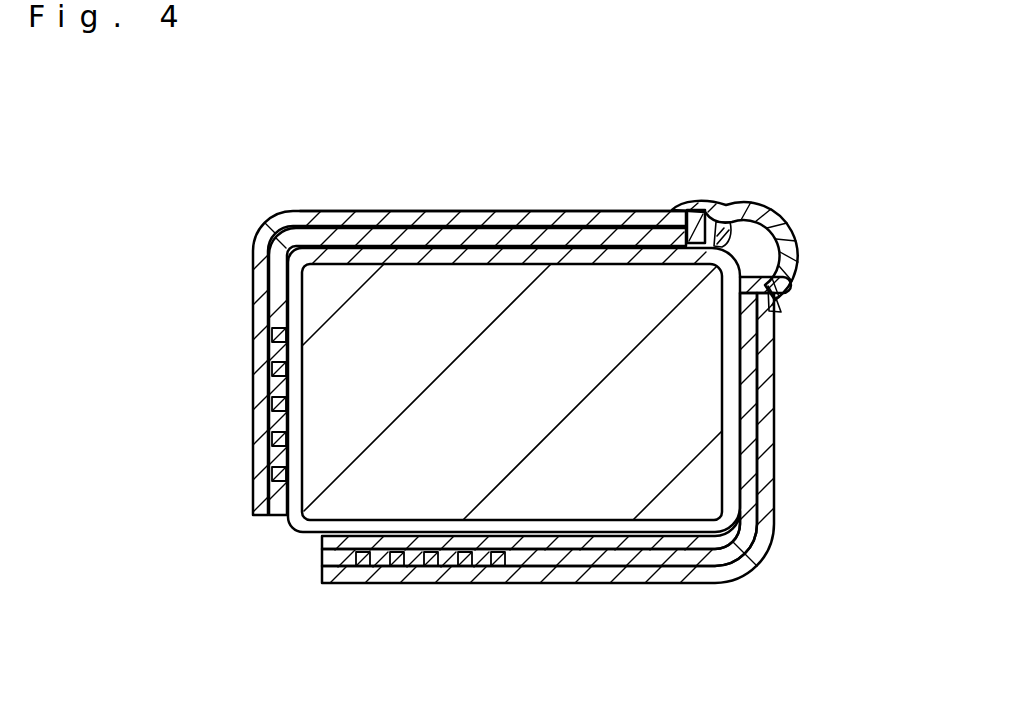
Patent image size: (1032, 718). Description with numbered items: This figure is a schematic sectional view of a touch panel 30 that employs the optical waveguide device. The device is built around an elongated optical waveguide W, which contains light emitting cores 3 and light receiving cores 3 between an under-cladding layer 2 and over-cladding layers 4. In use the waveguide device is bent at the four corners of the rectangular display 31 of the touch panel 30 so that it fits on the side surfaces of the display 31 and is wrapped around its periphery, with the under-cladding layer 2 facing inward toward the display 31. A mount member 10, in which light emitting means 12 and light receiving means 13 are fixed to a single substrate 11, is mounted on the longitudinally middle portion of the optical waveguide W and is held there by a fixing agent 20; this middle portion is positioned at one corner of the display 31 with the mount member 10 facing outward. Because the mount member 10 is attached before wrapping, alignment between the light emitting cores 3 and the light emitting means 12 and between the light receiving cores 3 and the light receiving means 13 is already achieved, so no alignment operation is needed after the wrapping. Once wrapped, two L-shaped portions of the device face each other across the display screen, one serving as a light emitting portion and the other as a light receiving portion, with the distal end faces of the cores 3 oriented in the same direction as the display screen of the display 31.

The under-cladding layer 2 is at (345, 577).
The cores 3 is at (280, 376).
The over-cladding layers 4 is at (262, 446).
The mount member 10 is at (606, 331).
The substrate 11 is at (787, 237).
The light emitting means 12 is at (694, 222).
The light receiving means 13 is at (785, 286).
The fixing agent 20 is at (685, 200).
The touch panel 30 is at (476, 382).
The display 31 is at (417, 283).
The optical waveguide W is at (548, 207).